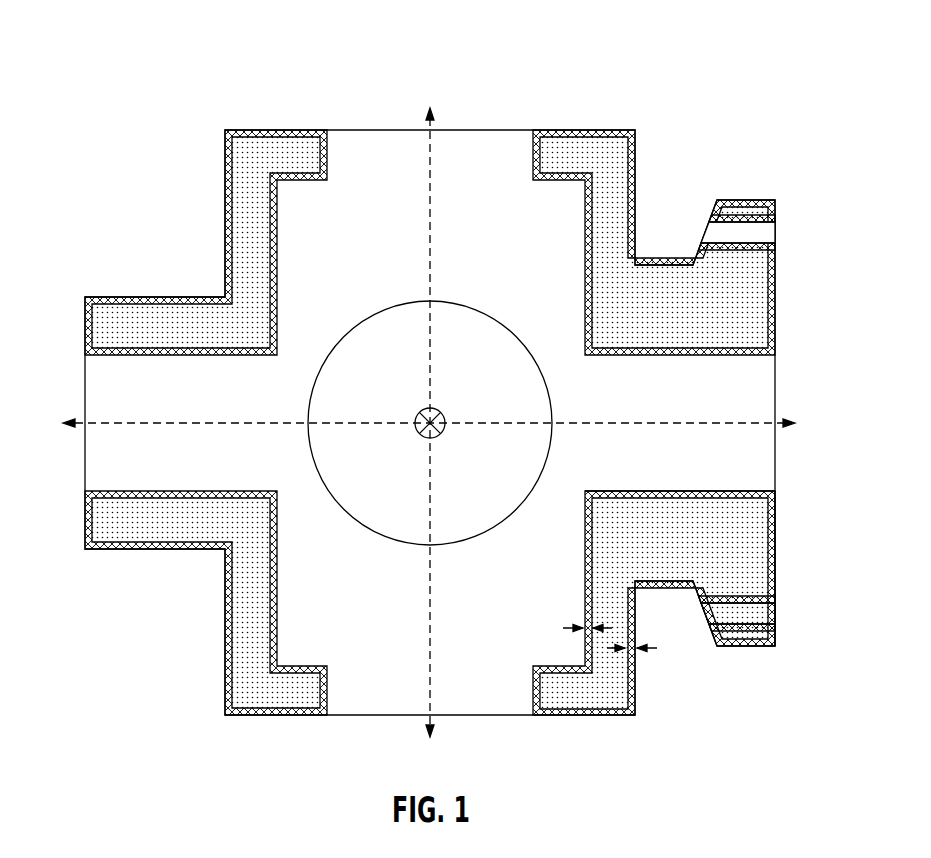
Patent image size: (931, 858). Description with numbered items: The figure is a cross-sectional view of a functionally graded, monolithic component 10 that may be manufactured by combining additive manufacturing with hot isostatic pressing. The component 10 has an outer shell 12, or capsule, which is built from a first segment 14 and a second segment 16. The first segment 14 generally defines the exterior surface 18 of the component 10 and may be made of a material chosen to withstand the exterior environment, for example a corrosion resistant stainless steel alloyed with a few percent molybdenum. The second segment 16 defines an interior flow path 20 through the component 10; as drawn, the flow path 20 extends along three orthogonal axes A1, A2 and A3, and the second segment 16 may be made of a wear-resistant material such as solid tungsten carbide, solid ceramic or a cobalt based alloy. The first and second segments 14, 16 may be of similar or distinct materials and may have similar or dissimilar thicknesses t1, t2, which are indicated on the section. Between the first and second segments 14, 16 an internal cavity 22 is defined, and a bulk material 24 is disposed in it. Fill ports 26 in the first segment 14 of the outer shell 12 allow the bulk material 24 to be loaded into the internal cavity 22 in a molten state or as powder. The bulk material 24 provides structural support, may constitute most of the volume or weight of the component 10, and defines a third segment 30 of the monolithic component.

The monolithic component 10 is at (155, 54).
The outer shell 12 is at (779, 490).
The first segment 14 is at (772, 545).
The second segment 16 is at (694, 492).
The exterior surface 18 is at (780, 585).
The interior flow path 20 is at (115, 476).
The internal cavity 22 is at (238, 145).
The bulk material 24 is at (242, 183).
The fill ports 26 is at (152, 289).
The third segment 30 is at (757, 304).
The first axis A1 is at (143, 423).
The second axis A2 is at (428, 240).
The third axis A3 is at (437, 410).
The thickness of first segment t1 is at (650, 648).
The thickness of second segment t2 is at (578, 627).